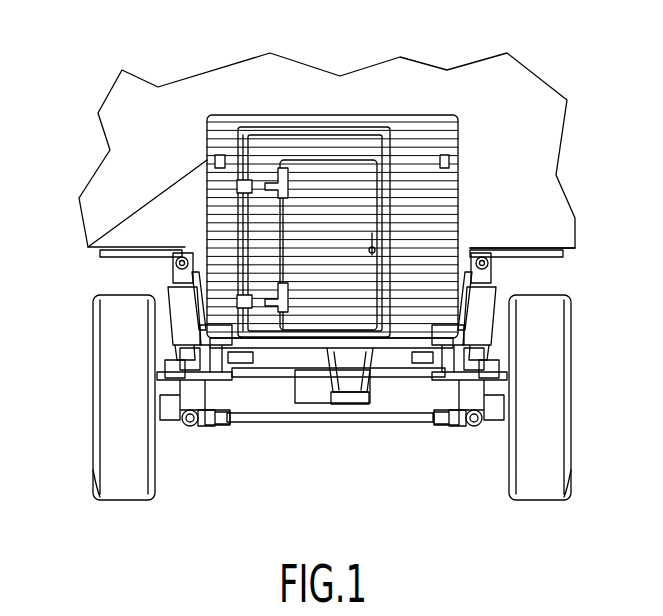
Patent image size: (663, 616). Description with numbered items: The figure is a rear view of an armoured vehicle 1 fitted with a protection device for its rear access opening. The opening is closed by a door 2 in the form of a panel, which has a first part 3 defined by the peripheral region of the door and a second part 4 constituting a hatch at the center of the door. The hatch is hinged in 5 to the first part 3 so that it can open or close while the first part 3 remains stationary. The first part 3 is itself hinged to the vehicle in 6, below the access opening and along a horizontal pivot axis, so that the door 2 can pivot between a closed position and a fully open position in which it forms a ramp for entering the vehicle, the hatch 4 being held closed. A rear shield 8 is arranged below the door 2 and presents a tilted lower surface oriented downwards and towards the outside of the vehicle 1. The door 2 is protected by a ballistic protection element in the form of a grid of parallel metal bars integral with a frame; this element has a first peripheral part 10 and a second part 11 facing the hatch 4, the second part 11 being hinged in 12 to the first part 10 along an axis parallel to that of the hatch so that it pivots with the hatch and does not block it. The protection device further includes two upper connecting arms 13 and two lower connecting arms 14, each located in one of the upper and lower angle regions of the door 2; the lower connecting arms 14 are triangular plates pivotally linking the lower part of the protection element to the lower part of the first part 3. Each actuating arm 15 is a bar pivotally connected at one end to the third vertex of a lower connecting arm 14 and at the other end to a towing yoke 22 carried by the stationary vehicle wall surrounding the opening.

The vehicle 1 is at (510, 87).
The door 2 is at (461, 197).
The first part 3 is at (413, 137).
The second part 4 is at (343, 170).
The hinge 5 is at (282, 171).
The hinge 6 is at (232, 347).
The rear shield 8 is at (377, 400).
The first peripheral part 10 is at (223, 118).
The second part 11 is at (247, 224).
The hinge 12 is at (236, 187).
The upper connecting arms 13 is at (215, 160).
The lower connecting arms 14 is at (219, 322).
The actuating arms 15 is at (179, 350).
The towing yoke 22 is at (200, 373).